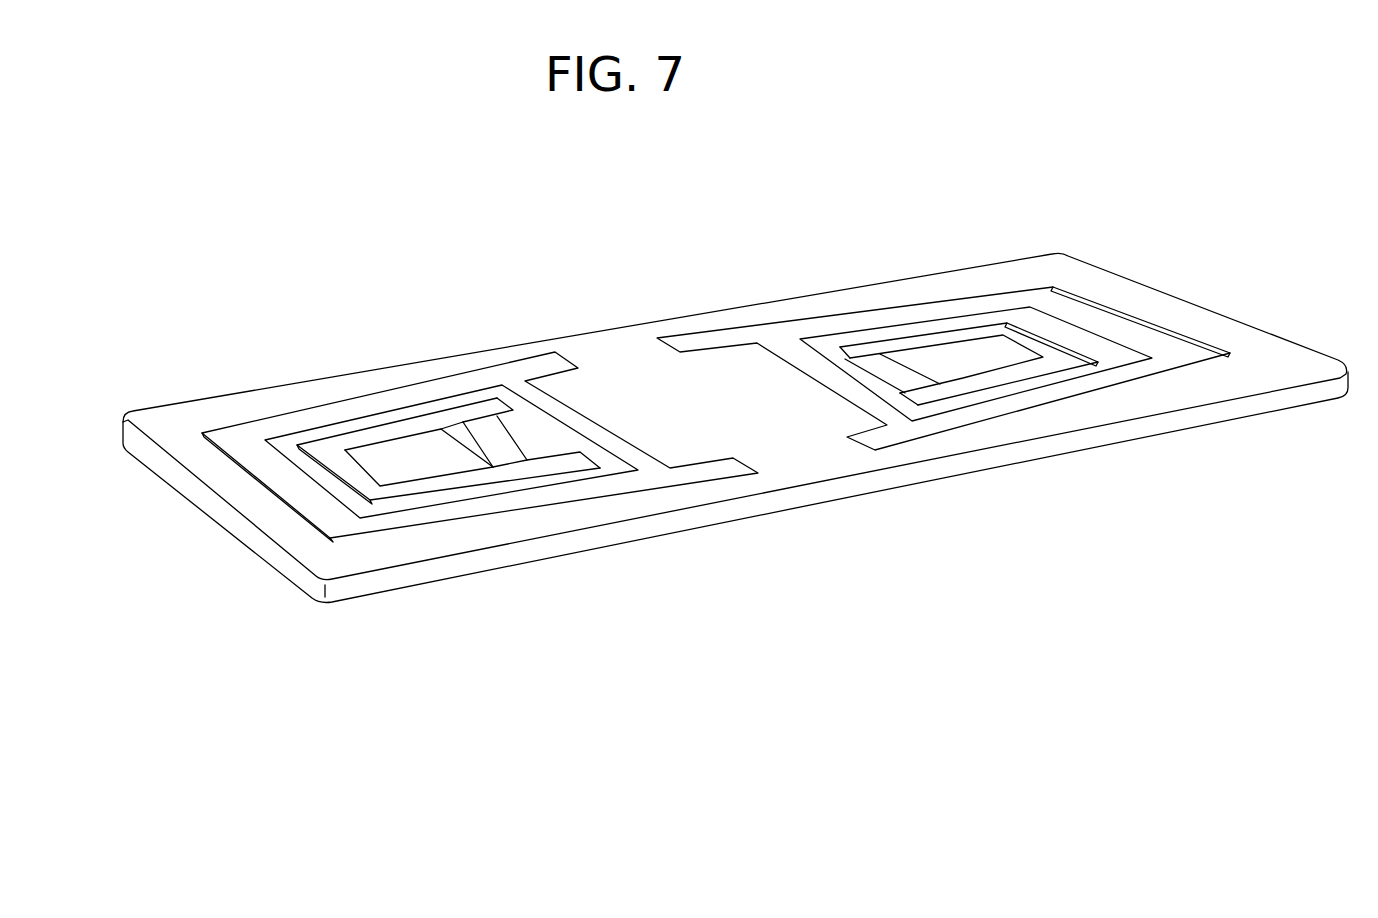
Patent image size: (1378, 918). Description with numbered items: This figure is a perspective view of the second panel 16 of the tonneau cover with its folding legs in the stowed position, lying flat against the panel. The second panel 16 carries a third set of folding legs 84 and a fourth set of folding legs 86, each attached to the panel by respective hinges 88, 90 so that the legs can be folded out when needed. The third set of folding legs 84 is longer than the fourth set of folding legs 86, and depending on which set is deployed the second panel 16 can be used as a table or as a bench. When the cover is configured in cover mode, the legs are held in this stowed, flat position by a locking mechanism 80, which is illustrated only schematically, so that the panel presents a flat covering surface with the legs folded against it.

The second panel 16 is at (779, 495).
The locking mechanism 80 is at (705, 352).
The third set of folding legs 84 is at (305, 498).
The fourth set of folding legs 86 is at (363, 440).
The hinge 88 is at (218, 447).
The hinge 90 is at (325, 460).